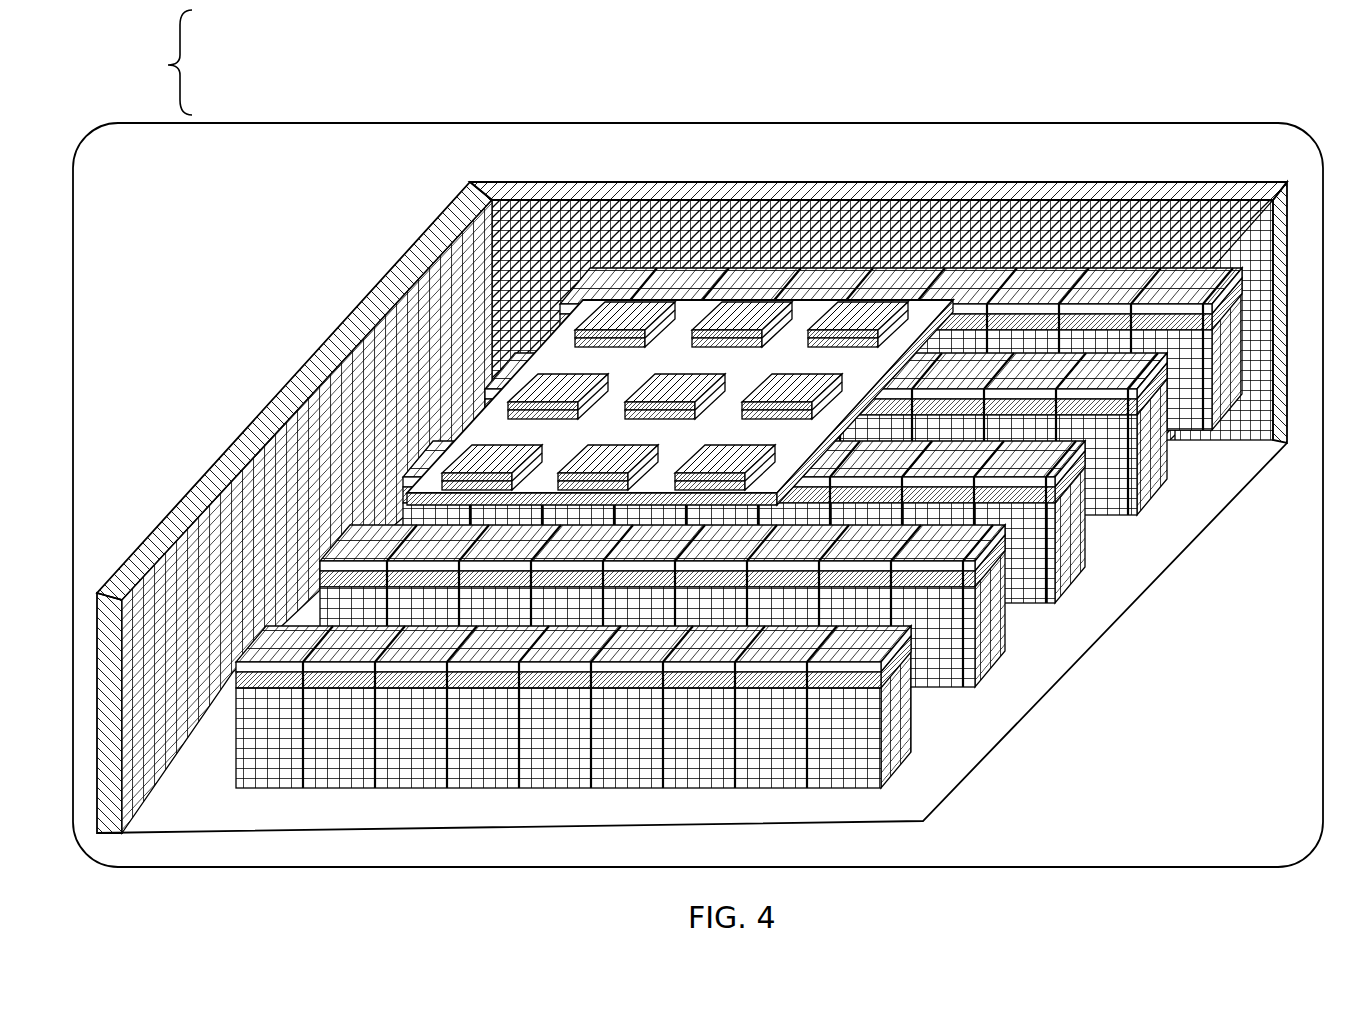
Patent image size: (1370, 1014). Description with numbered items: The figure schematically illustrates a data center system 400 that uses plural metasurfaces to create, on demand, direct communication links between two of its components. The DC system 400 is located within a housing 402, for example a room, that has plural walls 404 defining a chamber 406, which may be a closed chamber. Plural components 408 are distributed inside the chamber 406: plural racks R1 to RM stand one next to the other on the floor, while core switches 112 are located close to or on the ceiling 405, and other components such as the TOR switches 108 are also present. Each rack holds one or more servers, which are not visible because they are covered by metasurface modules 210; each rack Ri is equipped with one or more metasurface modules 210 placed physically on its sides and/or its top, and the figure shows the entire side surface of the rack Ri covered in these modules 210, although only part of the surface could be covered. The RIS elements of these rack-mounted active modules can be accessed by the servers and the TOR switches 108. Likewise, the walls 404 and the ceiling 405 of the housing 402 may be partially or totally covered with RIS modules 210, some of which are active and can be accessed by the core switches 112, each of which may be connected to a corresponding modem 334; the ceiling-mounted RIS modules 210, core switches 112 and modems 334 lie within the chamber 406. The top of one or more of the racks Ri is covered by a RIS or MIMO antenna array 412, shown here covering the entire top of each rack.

The DC system 400 is at (1262, 112).
The housing 402 is at (328, 324).
The walls 404 is at (1172, 195).
The ceiling 405 is at (1090, 200).
The chamber 406 is at (1080, 637).
The components 408 is at (168, 62).
The RIS or MIMO antenna array 412 is at (650, 650).
The modem 334 is at (847, 674).
The metasurface modules 210 is at (1181, 252).
The core switches 112 is at (626, 405).
The TOR switches 108 is at (758, 680).
The rack R1 is at (573, 511).
The rack Ri is at (781, 497).
The rack RM is at (1192, 462).